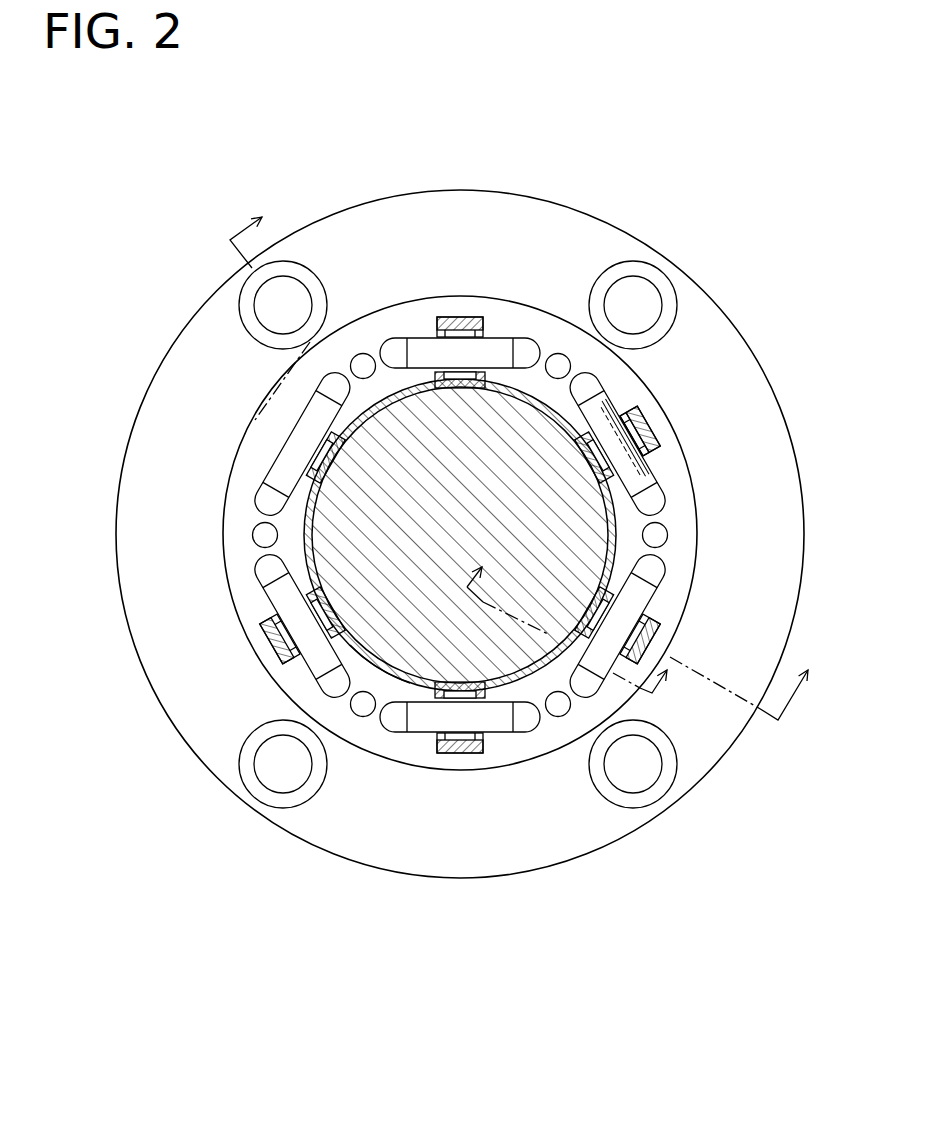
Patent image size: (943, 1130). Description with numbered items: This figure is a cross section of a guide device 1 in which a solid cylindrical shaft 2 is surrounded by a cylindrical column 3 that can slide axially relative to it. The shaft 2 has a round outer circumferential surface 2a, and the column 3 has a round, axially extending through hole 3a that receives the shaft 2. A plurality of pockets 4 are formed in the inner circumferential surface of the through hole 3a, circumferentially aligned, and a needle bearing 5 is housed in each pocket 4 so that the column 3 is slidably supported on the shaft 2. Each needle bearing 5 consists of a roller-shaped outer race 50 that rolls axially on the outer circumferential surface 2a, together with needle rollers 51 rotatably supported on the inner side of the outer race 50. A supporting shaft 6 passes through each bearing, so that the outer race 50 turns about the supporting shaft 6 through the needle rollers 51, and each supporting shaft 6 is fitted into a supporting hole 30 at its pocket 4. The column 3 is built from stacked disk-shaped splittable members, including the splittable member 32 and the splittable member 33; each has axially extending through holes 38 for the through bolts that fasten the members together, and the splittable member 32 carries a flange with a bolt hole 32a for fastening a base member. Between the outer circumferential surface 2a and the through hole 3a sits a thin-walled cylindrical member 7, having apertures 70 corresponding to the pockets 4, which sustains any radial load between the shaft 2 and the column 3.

The guide device 1 is at (510, 153).
The shaft 2 is at (483, 538).
The outer circumferential surface 2a is at (614, 523).
The column 3 is at (590, 190).
The through hole 3a is at (257, 541).
The pocket 4 is at (467, 318).
The needle bearing 5 is at (657, 462).
The supporting shaft 6 is at (282, 605).
The cylindrical member 7 is at (387, 678).
The supporting hole 30 is at (543, 724).
The splittable member 32 is at (360, 857).
The bolt hole 32a is at (648, 781).
The splittable member 33 is at (519, 315).
The through hole 38 is at (366, 356).
The outer race 50 is at (633, 420).
The needle roller 51 is at (647, 435).
The aperture 70 is at (352, 437).